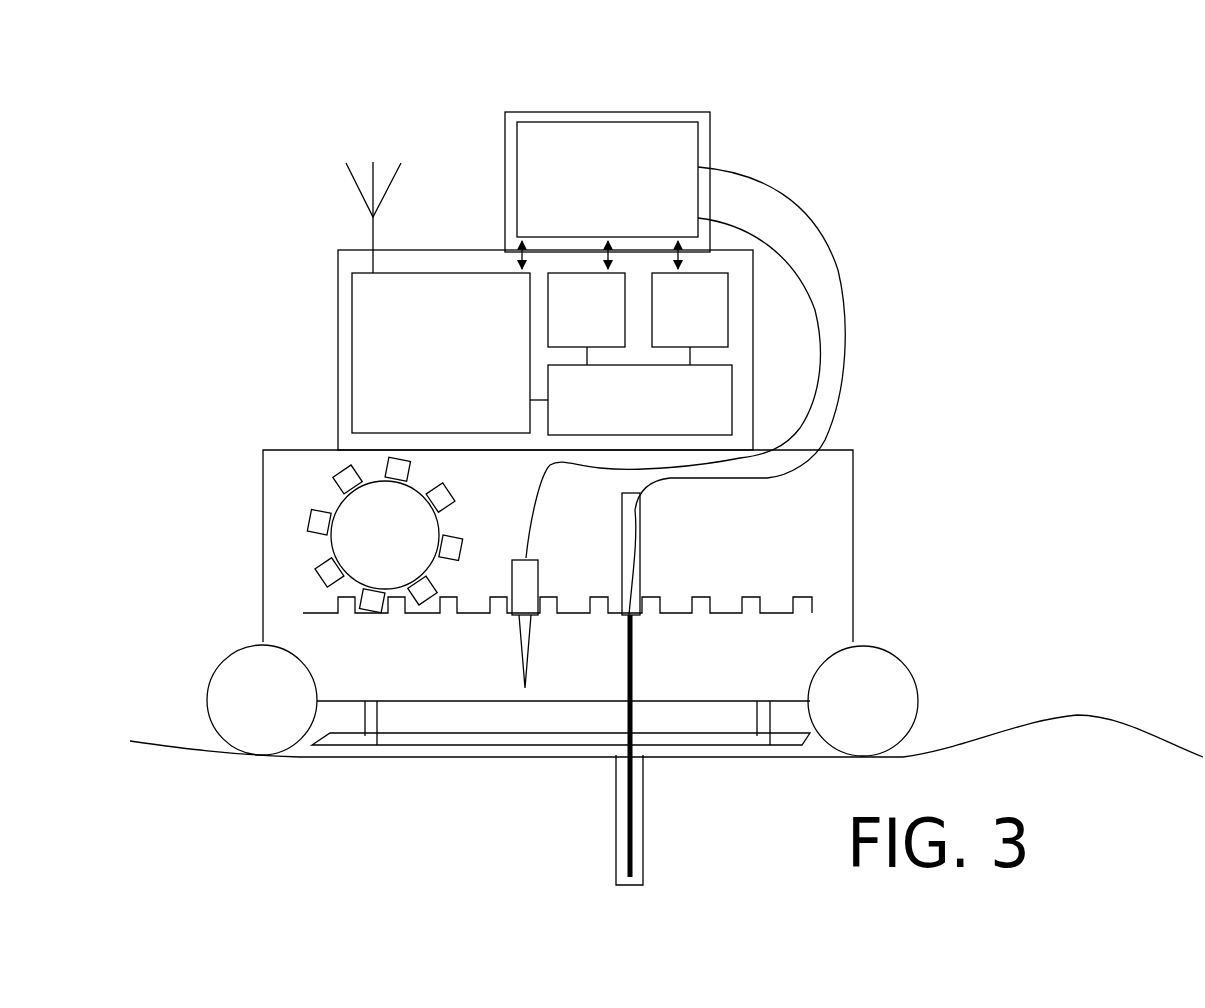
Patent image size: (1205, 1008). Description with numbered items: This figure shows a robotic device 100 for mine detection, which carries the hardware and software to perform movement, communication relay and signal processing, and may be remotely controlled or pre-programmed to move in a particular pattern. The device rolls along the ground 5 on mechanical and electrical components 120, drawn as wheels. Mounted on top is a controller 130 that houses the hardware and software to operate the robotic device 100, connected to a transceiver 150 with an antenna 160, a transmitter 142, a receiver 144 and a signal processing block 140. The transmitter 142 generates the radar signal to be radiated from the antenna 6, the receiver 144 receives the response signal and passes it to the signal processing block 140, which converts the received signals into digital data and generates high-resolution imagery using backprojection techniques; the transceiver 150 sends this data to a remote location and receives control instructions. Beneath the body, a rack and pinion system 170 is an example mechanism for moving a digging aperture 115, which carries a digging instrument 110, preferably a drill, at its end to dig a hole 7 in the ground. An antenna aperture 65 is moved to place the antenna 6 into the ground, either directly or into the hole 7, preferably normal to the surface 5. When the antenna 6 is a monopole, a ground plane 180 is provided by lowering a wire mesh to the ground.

The robotic device 100 is at (764, 134).
The controller 130 is at (683, 227).
The transceiver 150 is at (512, 423).
The antenna 160 is at (373, 233).
The transmitter 142 is at (548, 318).
The receiver 144 is at (728, 316).
The signal processing block 140 is at (732, 410).
The rack and pinion system 170 is at (305, 520).
The digging aperture 115 is at (526, 558).
The digging instrument 110 is at (517, 681).
The antenna aperture 65 is at (640, 565).
The antenna 6 is at (643, 693).
The hole 7 is at (650, 837).
The mechanical and electrical components 120 is at (208, 660).
The ground plane 180 is at (490, 746).
The surface 5 is at (1095, 717).